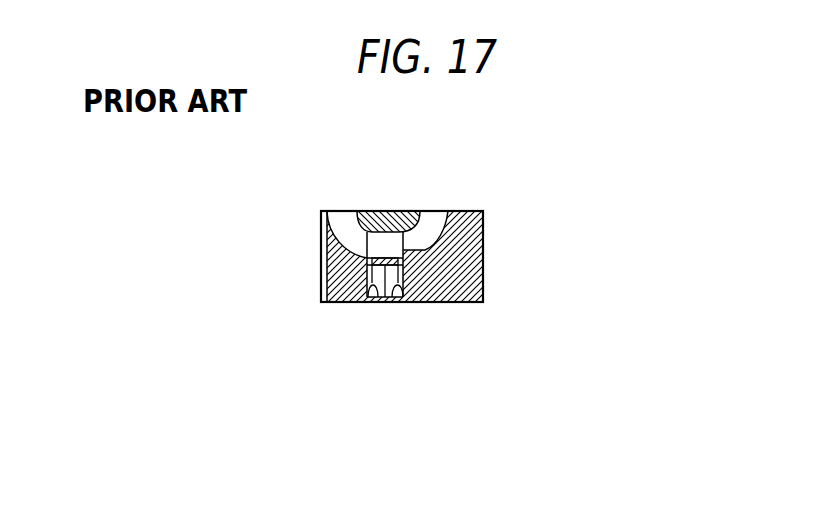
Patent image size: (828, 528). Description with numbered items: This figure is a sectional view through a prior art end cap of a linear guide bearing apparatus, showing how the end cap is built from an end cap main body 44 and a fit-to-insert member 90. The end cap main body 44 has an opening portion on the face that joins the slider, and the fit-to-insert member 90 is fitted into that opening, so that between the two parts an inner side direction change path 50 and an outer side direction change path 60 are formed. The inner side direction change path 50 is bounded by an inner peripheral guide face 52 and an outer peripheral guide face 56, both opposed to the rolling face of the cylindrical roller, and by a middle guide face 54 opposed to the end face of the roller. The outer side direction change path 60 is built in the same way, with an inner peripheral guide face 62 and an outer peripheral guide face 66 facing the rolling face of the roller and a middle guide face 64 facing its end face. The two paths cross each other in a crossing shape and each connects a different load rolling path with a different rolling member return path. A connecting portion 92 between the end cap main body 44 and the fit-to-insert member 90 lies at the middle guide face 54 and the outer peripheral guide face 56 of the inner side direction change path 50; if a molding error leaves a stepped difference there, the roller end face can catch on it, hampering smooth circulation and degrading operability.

The end cap main body 44 is at (484, 242).
The inner side direction change path 50 is at (428, 199).
The inner peripheral guide face 52 is at (426, 222).
The middle guide face 54 is at (437, 224).
The outer peripheral guide face 56 is at (395, 147).
The outer side direction change path 60 is at (365, 338).
The inner peripheral guide face 62 is at (383, 300).
The middle guide face 64 is at (366, 300).
The outer peripheral guide face 66 is at (400, 320).
The fit-to-insert member 90 is at (377, 211).
The connecting portion 92 is at (408, 250).